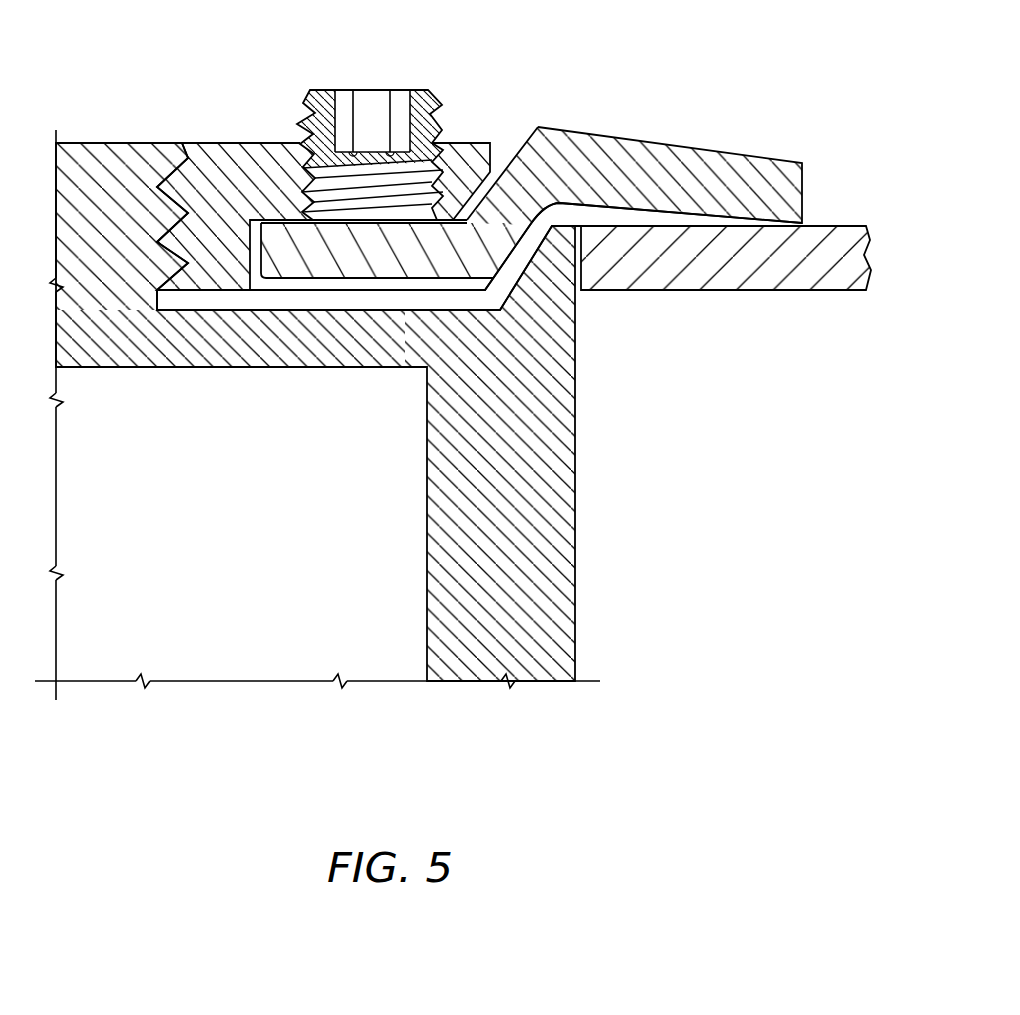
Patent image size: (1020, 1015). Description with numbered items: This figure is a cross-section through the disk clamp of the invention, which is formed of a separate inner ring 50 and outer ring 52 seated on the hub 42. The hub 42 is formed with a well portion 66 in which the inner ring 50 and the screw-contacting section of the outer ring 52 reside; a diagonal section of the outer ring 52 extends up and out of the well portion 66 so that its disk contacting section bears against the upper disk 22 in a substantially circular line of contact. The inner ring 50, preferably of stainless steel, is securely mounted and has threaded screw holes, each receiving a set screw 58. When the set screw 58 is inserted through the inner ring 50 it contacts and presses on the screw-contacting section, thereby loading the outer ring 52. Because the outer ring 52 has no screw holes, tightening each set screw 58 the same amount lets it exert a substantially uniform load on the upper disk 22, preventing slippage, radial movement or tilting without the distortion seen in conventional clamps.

The upper disk 22 is at (728, 285).
The hub 42 is at (570, 558).
The inner ring 50 is at (238, 163).
The outer ring 52 is at (628, 148).
The set screw 58 is at (415, 98).
The well portion 66 is at (503, 297).